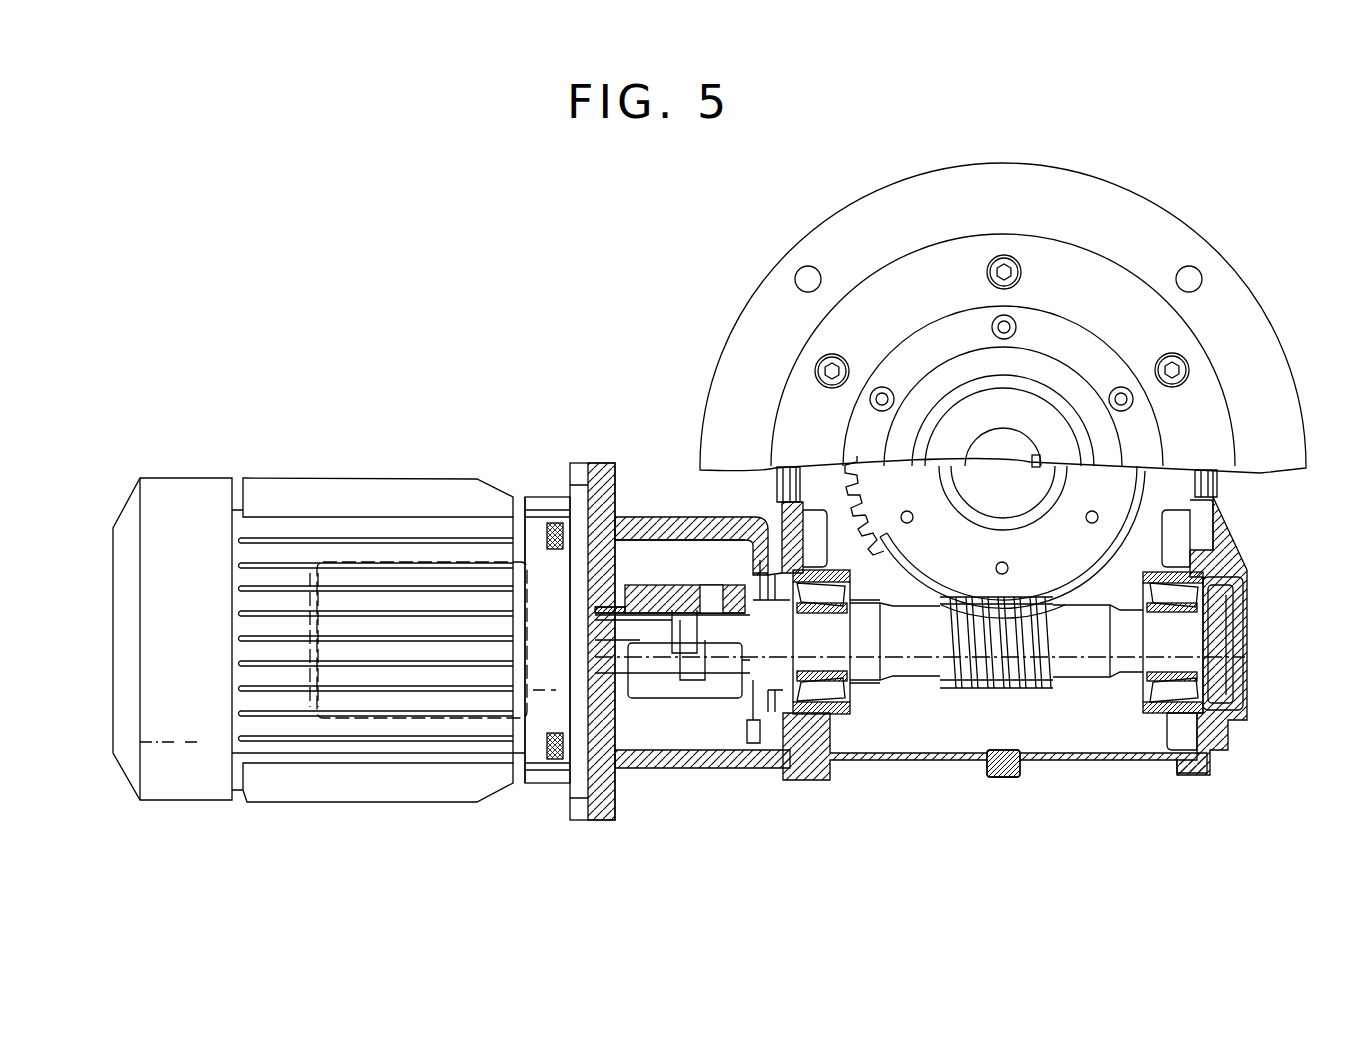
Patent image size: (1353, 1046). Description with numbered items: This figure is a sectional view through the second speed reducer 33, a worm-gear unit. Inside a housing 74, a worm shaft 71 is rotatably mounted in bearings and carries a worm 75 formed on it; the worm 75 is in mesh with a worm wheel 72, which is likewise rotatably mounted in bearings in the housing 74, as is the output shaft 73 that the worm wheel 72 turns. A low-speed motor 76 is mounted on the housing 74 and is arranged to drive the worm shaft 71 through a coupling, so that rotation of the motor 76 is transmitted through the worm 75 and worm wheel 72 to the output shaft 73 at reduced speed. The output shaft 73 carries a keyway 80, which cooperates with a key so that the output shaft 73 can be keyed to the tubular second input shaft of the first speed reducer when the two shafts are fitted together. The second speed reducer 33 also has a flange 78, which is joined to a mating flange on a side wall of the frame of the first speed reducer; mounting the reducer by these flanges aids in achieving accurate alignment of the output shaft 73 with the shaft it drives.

The low-speed motor 76 is at (363, 478).
The flange 78 is at (1163, 216).
The output shaft 73 is at (1020, 433).
The keyway 80 is at (1038, 459).
The second speed reducer 33 is at (1223, 514).
The worm wheel 72 is at (897, 580).
The worm 75 is at (977, 690).
The worm shaft 71 is at (1093, 677).
The housing 74 is at (942, 777).